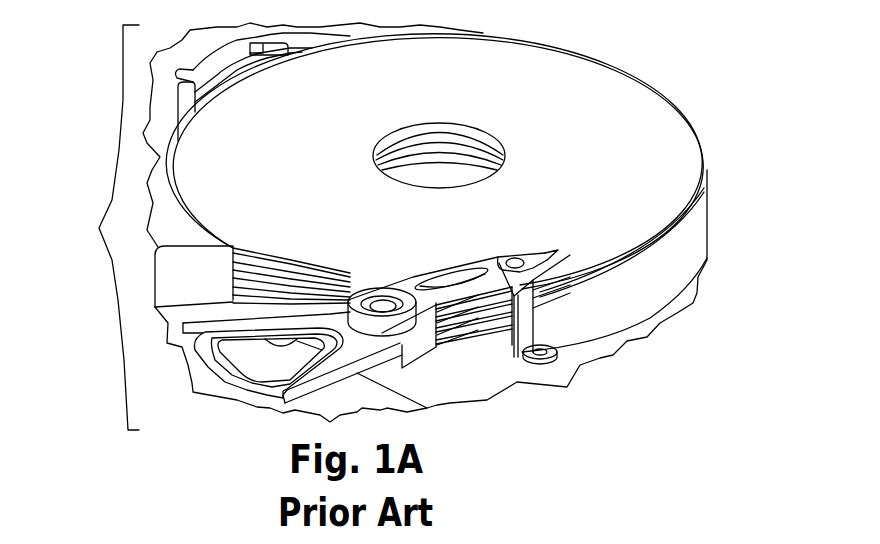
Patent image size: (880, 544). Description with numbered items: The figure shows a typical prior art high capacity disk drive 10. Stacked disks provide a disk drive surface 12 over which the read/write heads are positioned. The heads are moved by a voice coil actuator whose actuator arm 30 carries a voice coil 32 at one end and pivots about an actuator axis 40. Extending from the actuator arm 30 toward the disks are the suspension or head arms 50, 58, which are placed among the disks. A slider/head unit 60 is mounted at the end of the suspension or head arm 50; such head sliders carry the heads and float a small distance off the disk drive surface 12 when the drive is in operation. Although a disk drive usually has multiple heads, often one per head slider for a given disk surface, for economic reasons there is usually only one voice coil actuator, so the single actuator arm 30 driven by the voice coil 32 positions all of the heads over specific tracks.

The disk drive 10 is at (386, 226).
The disk drive surface 12 is at (627, 92).
The actuator arm 30 is at (413, 355).
The voice coil 32 is at (252, 385).
The actuator axis 40 is at (380, 299).
The suspension or head arm 50 is at (478, 262).
The suspension or head arm 58 is at (462, 350).
The slider/head unit 60 is at (548, 249).